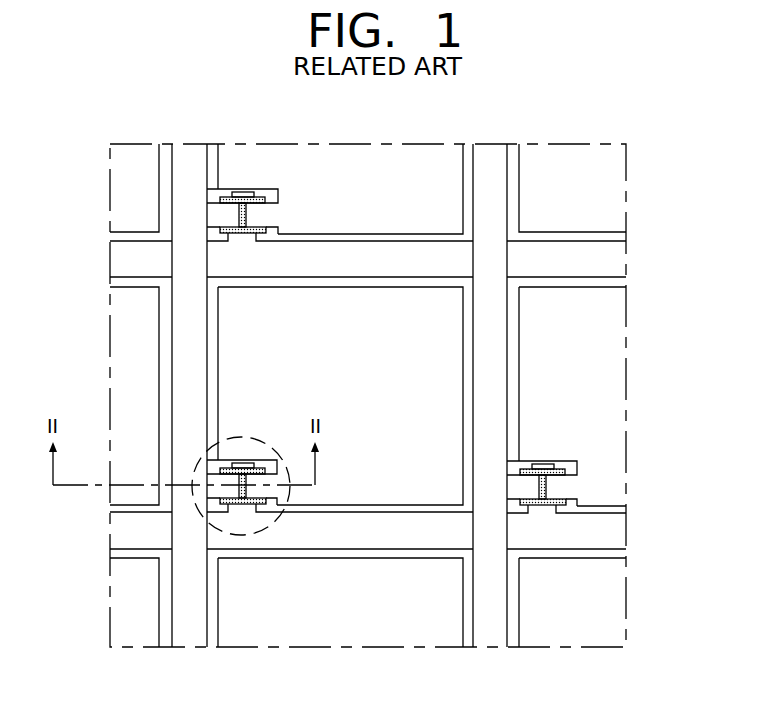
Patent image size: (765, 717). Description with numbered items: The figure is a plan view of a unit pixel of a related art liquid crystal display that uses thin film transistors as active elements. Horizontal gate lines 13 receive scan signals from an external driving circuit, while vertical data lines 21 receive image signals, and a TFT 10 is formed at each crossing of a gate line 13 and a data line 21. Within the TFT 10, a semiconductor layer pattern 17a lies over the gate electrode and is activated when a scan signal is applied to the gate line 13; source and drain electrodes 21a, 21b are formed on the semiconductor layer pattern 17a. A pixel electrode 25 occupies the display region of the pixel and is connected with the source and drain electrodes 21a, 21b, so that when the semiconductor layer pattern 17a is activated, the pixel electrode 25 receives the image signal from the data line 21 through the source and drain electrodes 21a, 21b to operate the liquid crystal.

The TFT 10 is at (158, 534).
The gate line 13 is at (613, 533).
The semiconductor layer pattern 17a is at (220, 466).
The data line 21 is at (182, 182).
The source electrode 21a is at (232, 506).
The drain electrode 21b is at (255, 508).
The pixel electrode 25 is at (362, 287).